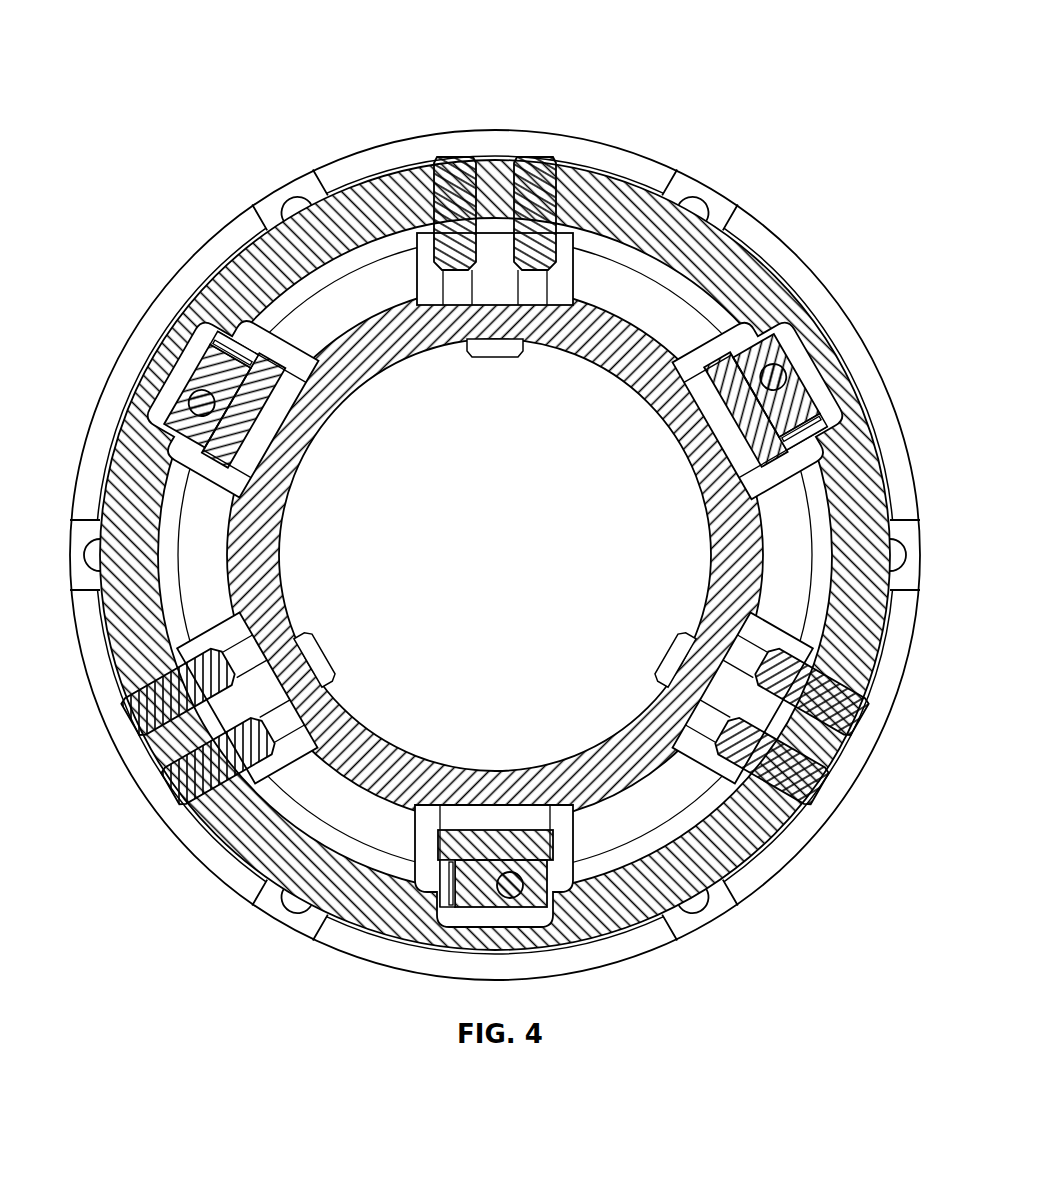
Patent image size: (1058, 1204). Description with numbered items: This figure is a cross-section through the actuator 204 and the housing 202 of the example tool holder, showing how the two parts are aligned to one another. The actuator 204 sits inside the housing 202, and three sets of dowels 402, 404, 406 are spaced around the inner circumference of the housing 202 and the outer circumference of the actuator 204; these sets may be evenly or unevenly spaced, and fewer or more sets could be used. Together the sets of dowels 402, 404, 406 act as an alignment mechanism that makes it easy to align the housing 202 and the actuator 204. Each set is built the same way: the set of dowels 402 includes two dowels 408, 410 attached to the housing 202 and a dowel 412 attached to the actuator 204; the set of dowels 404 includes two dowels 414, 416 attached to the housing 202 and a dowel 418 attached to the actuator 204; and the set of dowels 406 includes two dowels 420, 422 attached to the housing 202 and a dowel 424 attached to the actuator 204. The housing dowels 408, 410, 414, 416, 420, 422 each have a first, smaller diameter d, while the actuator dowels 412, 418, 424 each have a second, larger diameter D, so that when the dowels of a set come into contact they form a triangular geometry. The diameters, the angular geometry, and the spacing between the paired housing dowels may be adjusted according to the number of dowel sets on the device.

The housing 202 is at (265, 262).
The actuator 204 is at (668, 322).
The set of dowels 402 is at (378, 60).
The set of dowels 404 is at (140, 850).
The set of dowels 406 is at (850, 847).
The dowel 408 is at (455, 178).
The dowel 410 is at (535, 178).
The dowel 412 is at (510, 288).
The dowel 414 is at (147, 720).
The dowel 416 is at (183, 783).
The dowel 418 is at (268, 685).
The dowel 420 is at (810, 778).
The dowel 422 is at (850, 713).
The dowel 424 is at (725, 683).